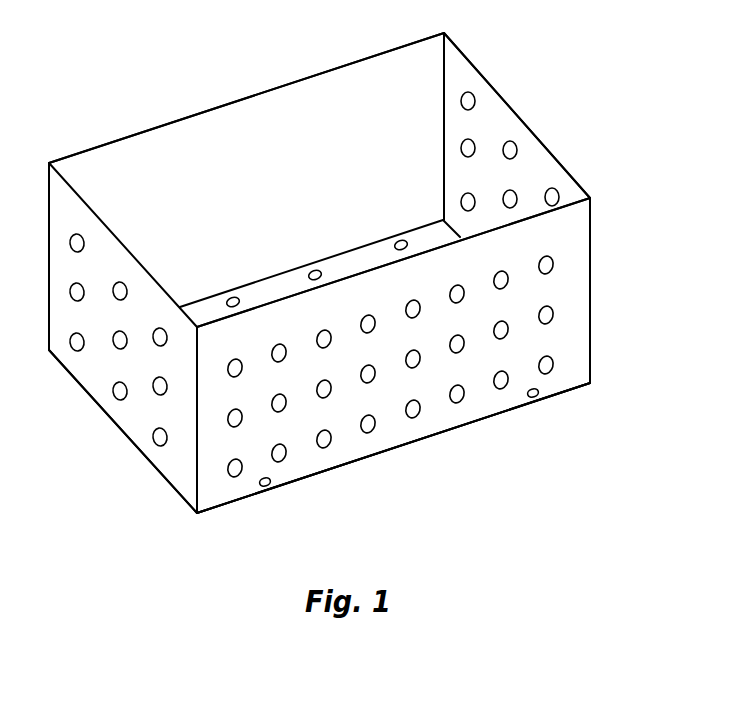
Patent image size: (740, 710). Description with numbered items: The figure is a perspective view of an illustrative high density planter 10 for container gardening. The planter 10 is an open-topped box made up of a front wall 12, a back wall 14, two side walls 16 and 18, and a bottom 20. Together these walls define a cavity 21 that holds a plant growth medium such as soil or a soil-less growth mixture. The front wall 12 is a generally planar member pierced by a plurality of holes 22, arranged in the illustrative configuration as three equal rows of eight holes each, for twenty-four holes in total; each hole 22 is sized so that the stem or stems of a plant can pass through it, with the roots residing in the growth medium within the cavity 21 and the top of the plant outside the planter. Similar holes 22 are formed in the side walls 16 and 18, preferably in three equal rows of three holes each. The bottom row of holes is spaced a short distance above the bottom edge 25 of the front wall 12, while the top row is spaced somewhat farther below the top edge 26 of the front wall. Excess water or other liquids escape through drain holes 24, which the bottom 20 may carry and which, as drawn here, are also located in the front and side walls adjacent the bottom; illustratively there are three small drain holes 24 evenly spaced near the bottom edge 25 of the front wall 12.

The high density planter 10 is at (85, 91).
The front wall 12 is at (563, 287).
The back wall 14 is at (277, 110).
The side wall 16 is at (137, 433).
The side wall 18 is at (457, 73).
The bottom 20 is at (268, 290).
The cavity 21 is at (163, 213).
The holes 22 is at (330, 430).
The drain holes 24 is at (401, 243).
The bottom edge 25 is at (445, 437).
The top edge 26 is at (532, 213).